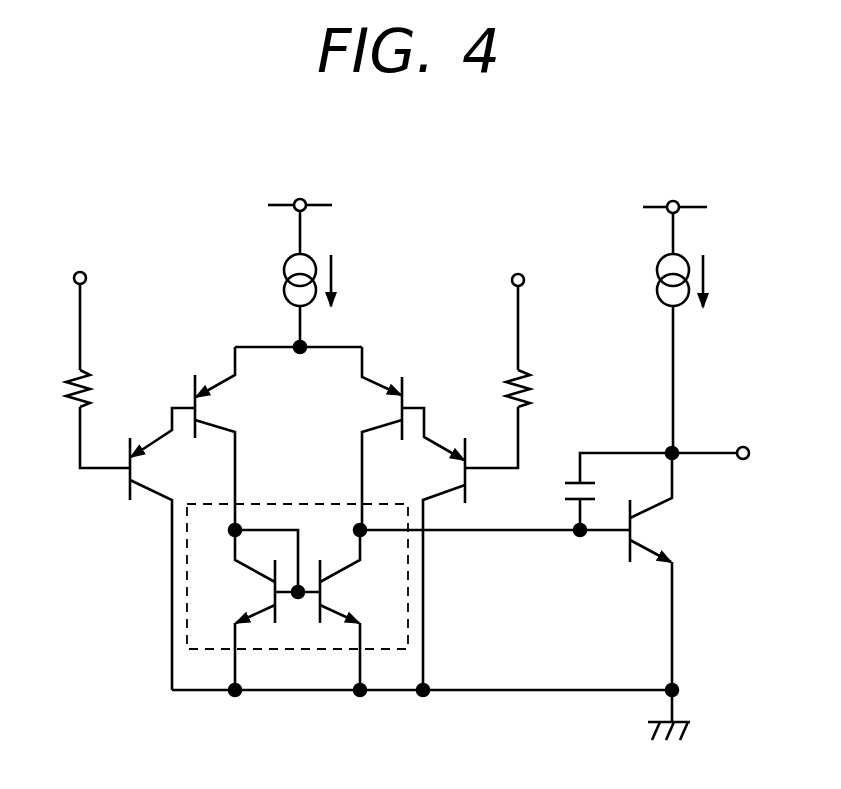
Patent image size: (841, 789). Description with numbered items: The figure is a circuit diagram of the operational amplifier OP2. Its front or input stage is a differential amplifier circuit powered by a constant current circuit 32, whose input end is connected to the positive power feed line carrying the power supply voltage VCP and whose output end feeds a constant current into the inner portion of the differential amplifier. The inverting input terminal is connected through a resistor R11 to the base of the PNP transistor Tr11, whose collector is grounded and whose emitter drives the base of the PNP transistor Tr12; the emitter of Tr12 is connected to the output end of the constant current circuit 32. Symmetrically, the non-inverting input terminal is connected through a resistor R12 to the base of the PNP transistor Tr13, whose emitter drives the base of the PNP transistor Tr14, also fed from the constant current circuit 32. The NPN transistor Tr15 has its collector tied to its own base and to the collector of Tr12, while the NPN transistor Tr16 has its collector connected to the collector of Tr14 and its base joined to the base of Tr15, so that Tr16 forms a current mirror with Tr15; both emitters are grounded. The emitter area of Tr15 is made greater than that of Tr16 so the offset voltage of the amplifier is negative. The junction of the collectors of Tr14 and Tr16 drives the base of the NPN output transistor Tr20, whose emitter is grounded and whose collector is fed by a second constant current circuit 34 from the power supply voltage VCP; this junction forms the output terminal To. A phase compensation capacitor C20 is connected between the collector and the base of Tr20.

The operational amplifier OP2 is at (580, 174).
The constant current circuit 32 is at (282, 290).
The constant current circuit 34 is at (657, 290).
The resistor R11 is at (92, 383).
The resistor R12 is at (498, 393).
The transistor Tr11 is at (143, 472).
The transistor Tr12 is at (205, 410).
The transistor Tr13 is at (457, 472).
The transistor Tr14 is at (392, 410).
The transistor Tr15 is at (267, 598).
The transistor Tr16 is at (328, 598).
The transistor Tr20 is at (662, 532).
The capacitor C20 is at (563, 492).
The output terminal To is at (730, 454).
The power supply voltage VCP is at (516, 222).